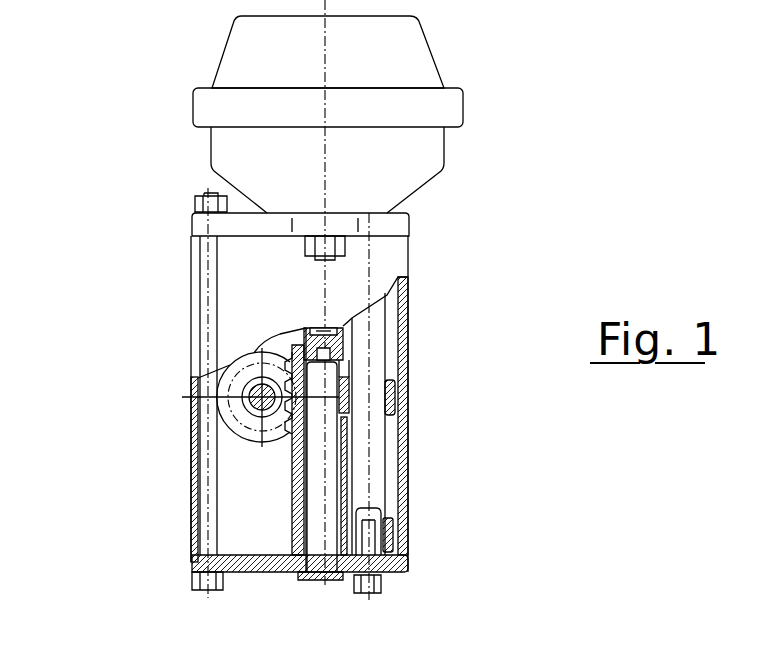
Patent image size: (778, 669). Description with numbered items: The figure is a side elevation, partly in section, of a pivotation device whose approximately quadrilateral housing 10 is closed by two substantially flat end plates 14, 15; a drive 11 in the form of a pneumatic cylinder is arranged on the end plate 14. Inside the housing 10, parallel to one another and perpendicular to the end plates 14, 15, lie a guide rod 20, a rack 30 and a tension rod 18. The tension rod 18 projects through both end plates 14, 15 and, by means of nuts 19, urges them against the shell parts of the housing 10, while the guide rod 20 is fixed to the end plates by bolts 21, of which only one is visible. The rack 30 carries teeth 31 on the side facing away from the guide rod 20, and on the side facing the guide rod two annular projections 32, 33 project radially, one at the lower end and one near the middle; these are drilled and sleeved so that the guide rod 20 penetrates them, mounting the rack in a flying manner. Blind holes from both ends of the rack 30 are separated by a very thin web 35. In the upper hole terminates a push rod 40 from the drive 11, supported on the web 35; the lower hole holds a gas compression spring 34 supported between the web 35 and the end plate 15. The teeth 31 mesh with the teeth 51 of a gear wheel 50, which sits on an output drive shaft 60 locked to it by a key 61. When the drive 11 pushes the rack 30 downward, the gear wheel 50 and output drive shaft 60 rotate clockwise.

The housing 10 is at (112, 264).
The drive 11 is at (410, 45).
The end plate 14 is at (403, 224).
The end plate 15 is at (243, 567).
The tension rod 18 is at (213, 494).
The nuts 19 is at (200, 200).
The guide rod 20 is at (372, 468).
The bolts 21 is at (373, 588).
The rack 30 is at (290, 562).
The teeth 31 is at (290, 420).
The annular projection 32 is at (397, 530).
The annular projection 33 is at (393, 393).
The gas compression spring 34 is at (333, 563).
The web 35 is at (344, 341).
The push rod 40 is at (342, 322).
The gear wheel 50 is at (257, 408).
The teeth 51 is at (297, 365).
The output drive shaft 60 is at (246, 390).
The key 61 is at (230, 395).